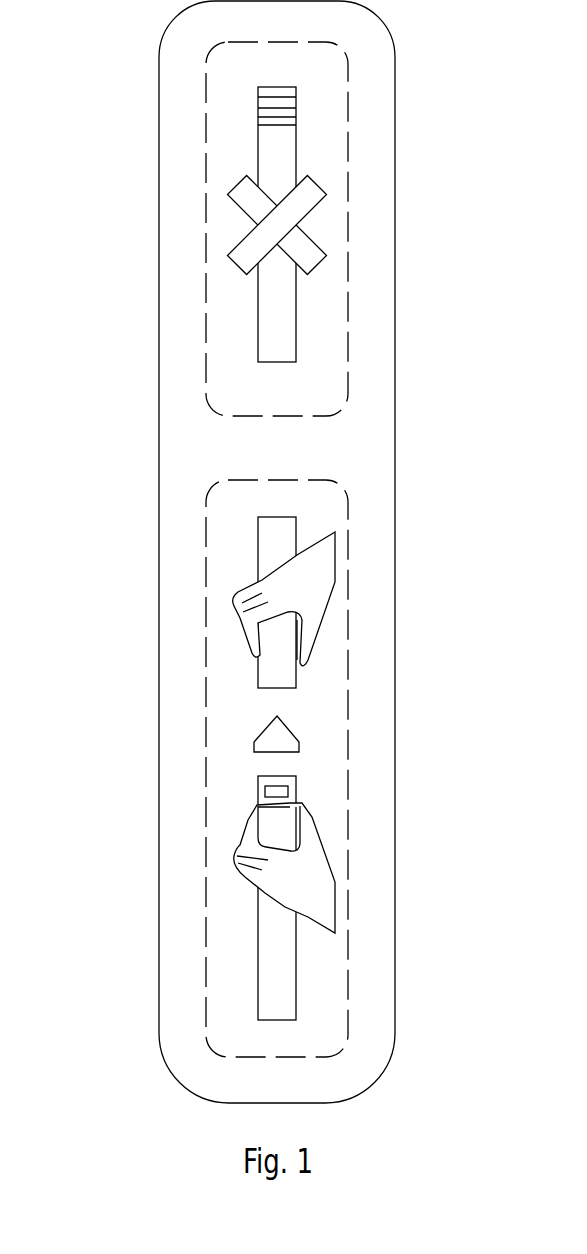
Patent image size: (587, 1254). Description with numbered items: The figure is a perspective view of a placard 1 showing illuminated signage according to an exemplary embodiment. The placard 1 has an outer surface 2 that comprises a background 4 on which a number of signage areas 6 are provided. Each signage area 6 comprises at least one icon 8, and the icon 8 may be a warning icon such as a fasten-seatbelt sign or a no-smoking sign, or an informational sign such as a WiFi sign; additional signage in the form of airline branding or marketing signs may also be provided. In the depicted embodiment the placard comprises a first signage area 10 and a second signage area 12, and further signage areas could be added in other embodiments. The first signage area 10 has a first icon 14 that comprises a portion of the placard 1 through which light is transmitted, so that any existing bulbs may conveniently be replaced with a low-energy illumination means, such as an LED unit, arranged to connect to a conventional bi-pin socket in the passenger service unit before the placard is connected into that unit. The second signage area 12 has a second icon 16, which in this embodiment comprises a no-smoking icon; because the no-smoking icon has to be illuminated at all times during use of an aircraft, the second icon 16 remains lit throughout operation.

The placard 1 is at (219, 552).
The outer surface 2 is at (159, 384).
The background 4 is at (358, 448).
The signage area 6 is at (226, 645).
The icon 8 is at (275, 155).
The first signage area 10 is at (330, 755).
The second signage area 12 is at (323, 103).
The first icon 14 is at (272, 960).
The second icon 16 is at (276, 318).